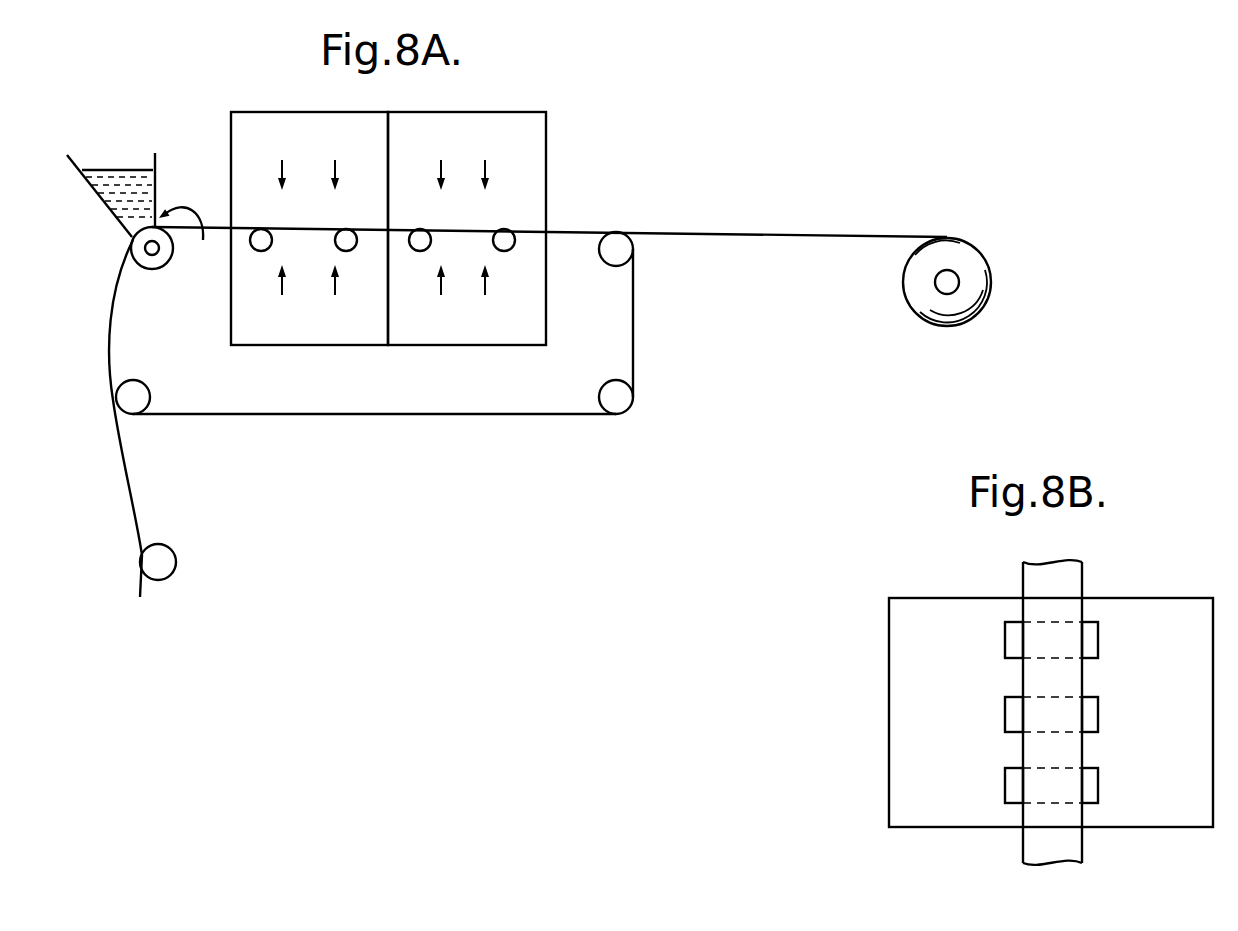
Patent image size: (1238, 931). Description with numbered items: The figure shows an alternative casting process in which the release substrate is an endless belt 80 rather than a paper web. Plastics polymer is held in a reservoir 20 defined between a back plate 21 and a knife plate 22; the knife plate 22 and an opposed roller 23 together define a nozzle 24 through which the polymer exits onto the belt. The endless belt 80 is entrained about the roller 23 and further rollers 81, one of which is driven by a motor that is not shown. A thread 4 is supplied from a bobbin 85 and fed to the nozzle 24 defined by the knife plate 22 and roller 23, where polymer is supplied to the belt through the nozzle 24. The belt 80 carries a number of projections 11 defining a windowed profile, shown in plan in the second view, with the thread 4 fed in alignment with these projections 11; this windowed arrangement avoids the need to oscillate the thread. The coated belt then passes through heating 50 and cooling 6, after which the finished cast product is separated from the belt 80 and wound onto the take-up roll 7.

In FIG. 8A, the thread 4 is at (120, 487).
In FIG. 8B, the thread 4 is at (1072, 848).
In FIG. 8A, the cooling 6 is at (480, 345).
In FIG. 8A, the take-up roll 7 is at (992, 297).
In FIG. 8B, the projections 11 is at (1012, 632).
In FIG. 8A, the reservoir 20 is at (148, 182).
In FIG. 8A, the back plate 21 is at (108, 212).
In FIG. 8A, the knife plate 22 is at (155, 153).
In FIG. 8A, the roller 23 is at (152, 269).
In FIG. 8A, the nozzle 24 is at (189, 244).
In FIG. 8A, the heating 50 is at (345, 345).
In FIG. 8A, the endless belt 80 is at (453, 415).
In FIG. 8B, the endless belt 80 is at (1182, 822).
In FIG. 8A, the rollers 81 is at (148, 398).
In FIG. 8A, the bobbin 85 is at (154, 586).